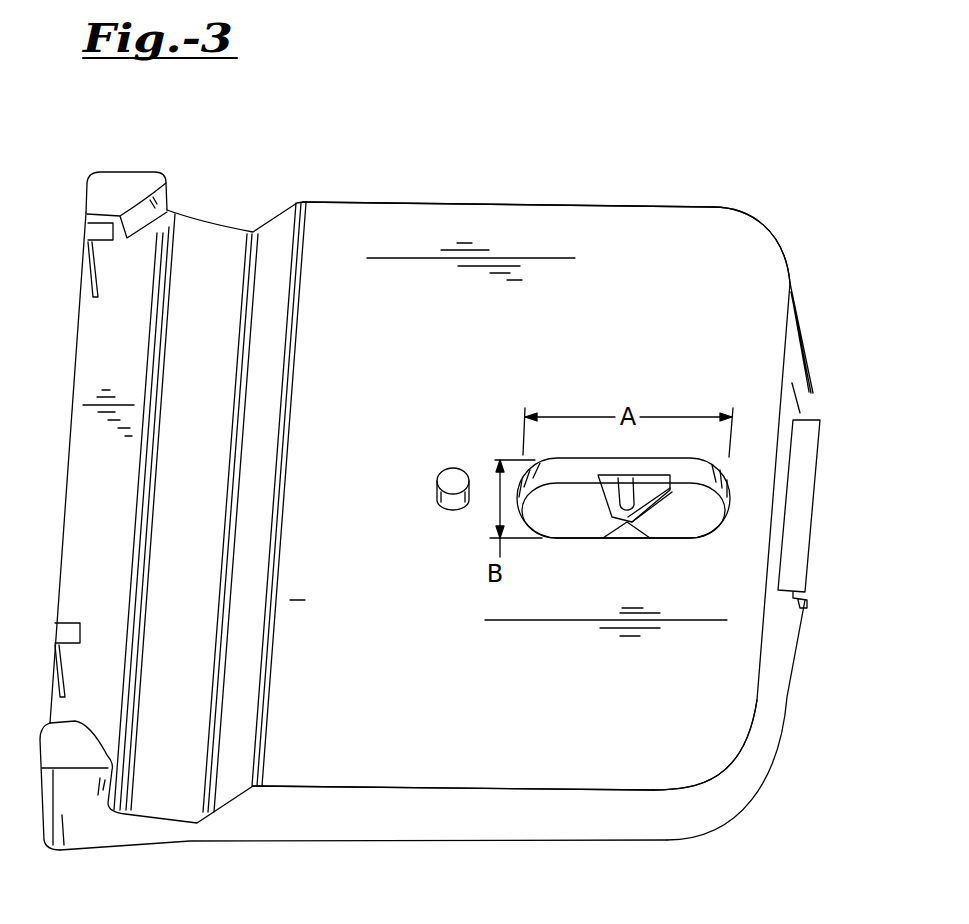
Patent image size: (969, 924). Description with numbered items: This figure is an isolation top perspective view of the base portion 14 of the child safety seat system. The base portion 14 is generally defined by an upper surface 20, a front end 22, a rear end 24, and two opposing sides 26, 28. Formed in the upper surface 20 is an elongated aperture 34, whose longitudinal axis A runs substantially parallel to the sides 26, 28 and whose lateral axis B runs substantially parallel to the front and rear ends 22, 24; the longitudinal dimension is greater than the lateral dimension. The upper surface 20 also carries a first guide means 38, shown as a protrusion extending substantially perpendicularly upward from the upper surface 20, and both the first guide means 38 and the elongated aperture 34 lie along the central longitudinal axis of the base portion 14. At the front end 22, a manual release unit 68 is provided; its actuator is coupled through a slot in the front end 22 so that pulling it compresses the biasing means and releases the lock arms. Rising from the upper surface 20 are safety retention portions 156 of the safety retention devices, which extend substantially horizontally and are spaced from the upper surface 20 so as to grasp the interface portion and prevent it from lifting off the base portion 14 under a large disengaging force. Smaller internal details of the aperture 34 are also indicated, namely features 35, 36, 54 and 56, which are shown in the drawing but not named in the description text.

The base portion 14 is at (732, 207).
The upper surface 20 is at (613, 223).
The front end 22 is at (770, 728).
The rear end 24 is at (68, 468).
The side 26 is at (372, 202).
The side 28 is at (467, 815).
The elongated aperture 34 is at (663, 513).
The recess 35 is at (525, 500).
The slot 36 is at (725, 490).
The first guide means 38 is at (438, 468).
The latch tab 54 is at (600, 498).
The notch 56 is at (605, 522).
The manual release unit 68 is at (805, 596).
The safety retention portion 156 is at (92, 230).